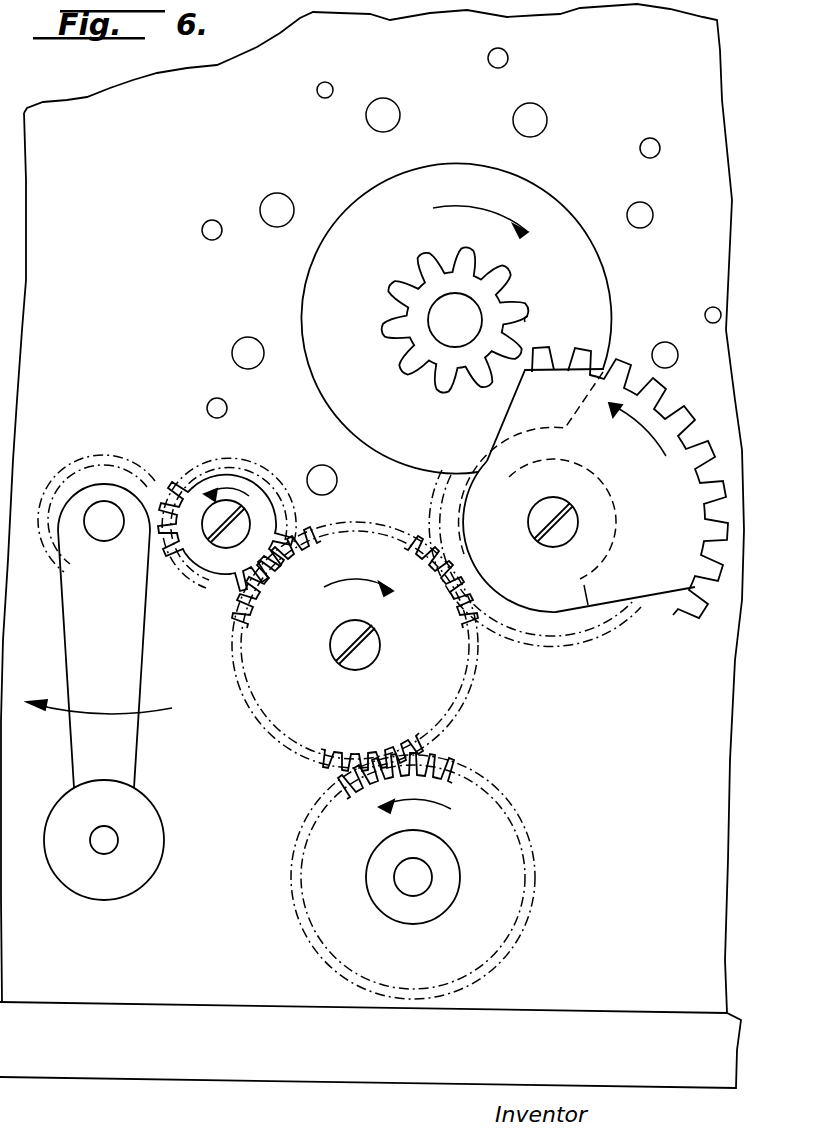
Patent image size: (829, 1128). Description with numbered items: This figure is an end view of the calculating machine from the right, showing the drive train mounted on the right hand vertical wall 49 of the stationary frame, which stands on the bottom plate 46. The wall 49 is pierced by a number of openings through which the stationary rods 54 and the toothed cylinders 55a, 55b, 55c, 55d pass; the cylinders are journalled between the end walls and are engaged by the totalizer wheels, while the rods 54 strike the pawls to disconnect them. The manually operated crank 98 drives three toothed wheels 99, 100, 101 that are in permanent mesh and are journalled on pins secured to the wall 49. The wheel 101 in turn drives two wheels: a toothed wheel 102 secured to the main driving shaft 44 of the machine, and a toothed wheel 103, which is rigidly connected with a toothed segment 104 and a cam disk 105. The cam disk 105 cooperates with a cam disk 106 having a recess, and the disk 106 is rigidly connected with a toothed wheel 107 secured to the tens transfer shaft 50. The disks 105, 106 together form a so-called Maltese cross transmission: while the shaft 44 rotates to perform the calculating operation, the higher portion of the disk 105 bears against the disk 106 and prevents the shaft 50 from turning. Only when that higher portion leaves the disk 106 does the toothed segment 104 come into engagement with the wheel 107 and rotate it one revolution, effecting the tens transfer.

The main driving shaft 44 is at (404, 879).
The bottom plate 46 is at (353, 1070).
The vertical wall 49 is at (698, 48).
The shaft 50 is at (453, 318).
The stationary rods 54 is at (316, 91).
The toothed cylinder 55a is at (338, 482).
The toothed cylinder 55b is at (252, 342).
The toothed cylinder 55c is at (286, 198).
The toothed cylinder 55d is at (395, 105).
The crank 98 is at (125, 750).
The toothed wheel 99 is at (104, 462).
The toothed wheel 100 is at (252, 466).
The toothed wheel 101 is at (278, 742).
The toothed wheel 102 is at (493, 790).
The toothed wheel 103 is at (525, 645).
The toothed segment 104 is at (701, 590).
The cam disk 105 is at (608, 494).
The cam disk 106 is at (548, 210).
The toothed wheel 107 is at (522, 318).